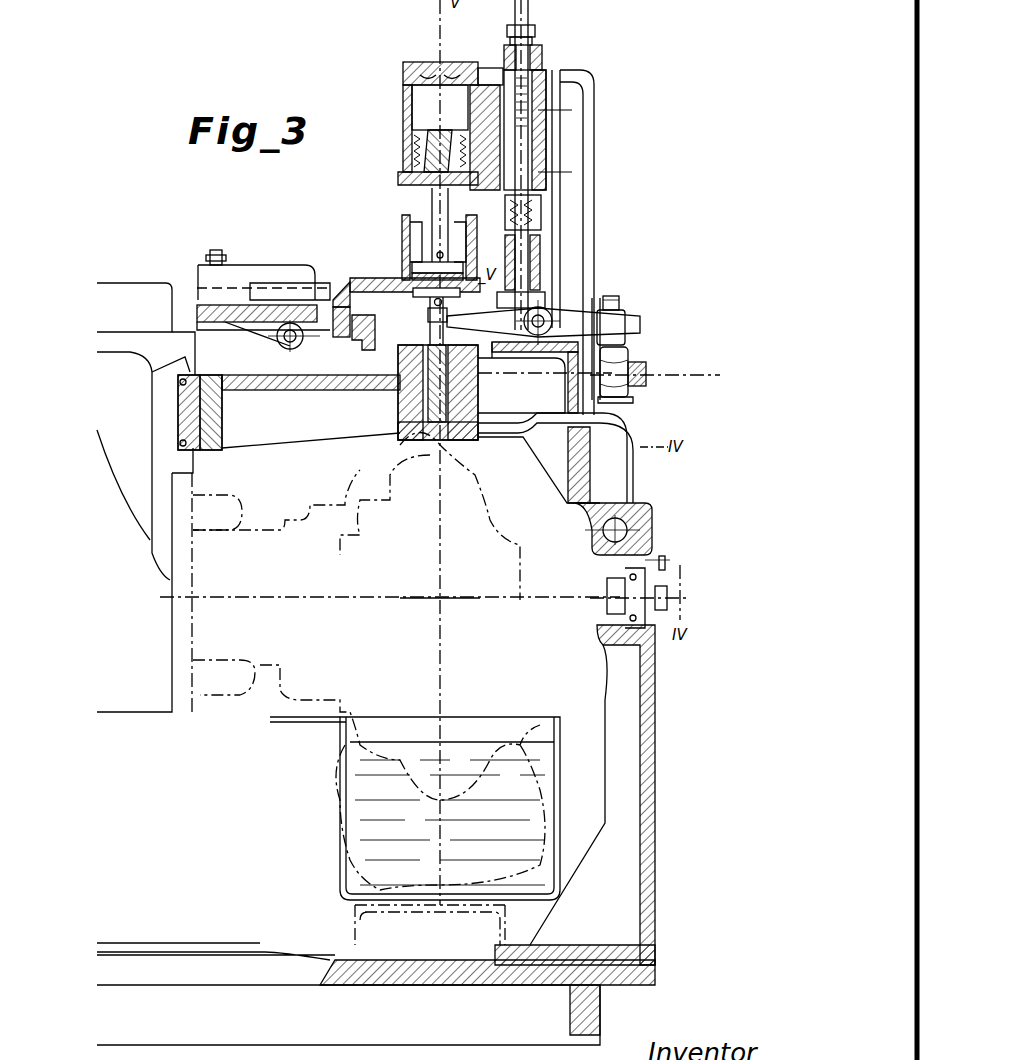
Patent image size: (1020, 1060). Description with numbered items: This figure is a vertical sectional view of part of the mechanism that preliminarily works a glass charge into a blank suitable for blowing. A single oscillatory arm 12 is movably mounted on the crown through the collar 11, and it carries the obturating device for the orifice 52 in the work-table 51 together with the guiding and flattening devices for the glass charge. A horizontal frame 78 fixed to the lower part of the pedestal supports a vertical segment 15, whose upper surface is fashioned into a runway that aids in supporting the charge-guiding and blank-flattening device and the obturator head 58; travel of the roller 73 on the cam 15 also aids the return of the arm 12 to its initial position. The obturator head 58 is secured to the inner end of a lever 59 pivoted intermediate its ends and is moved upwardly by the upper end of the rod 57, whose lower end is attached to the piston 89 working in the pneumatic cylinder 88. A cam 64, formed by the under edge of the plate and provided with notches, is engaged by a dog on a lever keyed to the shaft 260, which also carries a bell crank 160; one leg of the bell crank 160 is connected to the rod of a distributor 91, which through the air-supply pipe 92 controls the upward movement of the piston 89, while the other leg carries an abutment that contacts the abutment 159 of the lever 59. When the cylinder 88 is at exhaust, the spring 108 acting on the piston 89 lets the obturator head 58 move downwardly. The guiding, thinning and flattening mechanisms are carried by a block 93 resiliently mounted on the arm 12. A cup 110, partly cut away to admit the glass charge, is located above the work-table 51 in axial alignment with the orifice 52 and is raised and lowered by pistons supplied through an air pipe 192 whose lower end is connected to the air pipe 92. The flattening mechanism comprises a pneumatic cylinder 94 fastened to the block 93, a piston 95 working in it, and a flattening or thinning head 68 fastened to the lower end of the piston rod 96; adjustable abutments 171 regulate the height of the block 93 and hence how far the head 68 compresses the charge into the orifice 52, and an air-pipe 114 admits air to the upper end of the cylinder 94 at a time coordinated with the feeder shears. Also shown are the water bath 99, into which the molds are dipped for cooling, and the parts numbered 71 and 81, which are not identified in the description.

The collar 11 is at (208, 380).
The oscillatory arm 12 is at (290, 392).
The vertical segment 15 is at (650, 722).
The work-table 51 is at (340, 286).
The orifice 52 is at (390, 282).
The rod 57 is at (450, 338).
The obturator head 58 is at (422, 295).
The lever 59 is at (538, 322).
The cam 64 is at (372, 330).
The flattening or thinning head 68 is at (412, 252).
The adjusting spring unit 71 is at (530, 244).
The roller 73 is at (612, 580).
The horizontal frame 78 is at (598, 1002).
The pivot pin 81 is at (296, 338).
The pneumatic cylinder 88 is at (468, 410).
The piston 89 is at (412, 412).
The distributor 91 is at (648, 530).
The air-supply pipe 92 is at (634, 478).
The block 93 is at (552, 100).
The pneumatic cylinder 94 is at (415, 115).
The piston 95 is at (410, 152).
The piston rod 96 is at (448, 210).
The water bath 99 is at (550, 790).
The spring 108 is at (395, 392).
The cup 110 is at (402, 225).
The air-pipe 114 is at (432, 66).
The abutment 159 is at (615, 345).
The bell crank 160 is at (628, 362).
The adjustable abutments 171 is at (522, 75).
The air pipe 192 is at (448, 70).
The shaft 260 is at (646, 385).